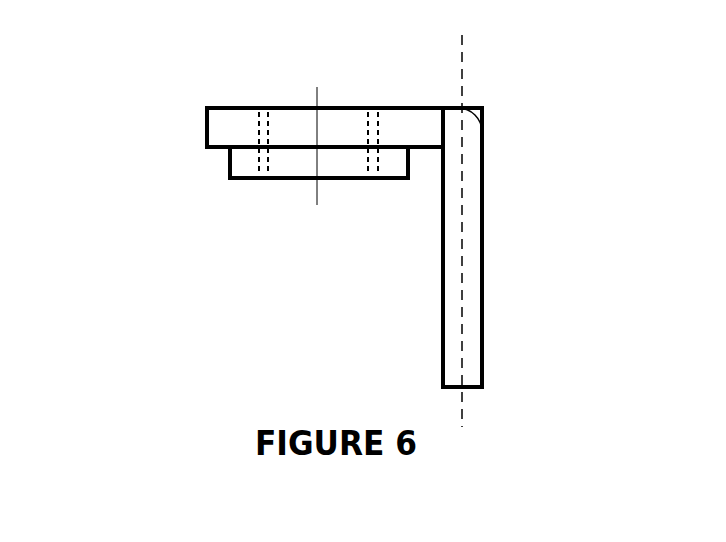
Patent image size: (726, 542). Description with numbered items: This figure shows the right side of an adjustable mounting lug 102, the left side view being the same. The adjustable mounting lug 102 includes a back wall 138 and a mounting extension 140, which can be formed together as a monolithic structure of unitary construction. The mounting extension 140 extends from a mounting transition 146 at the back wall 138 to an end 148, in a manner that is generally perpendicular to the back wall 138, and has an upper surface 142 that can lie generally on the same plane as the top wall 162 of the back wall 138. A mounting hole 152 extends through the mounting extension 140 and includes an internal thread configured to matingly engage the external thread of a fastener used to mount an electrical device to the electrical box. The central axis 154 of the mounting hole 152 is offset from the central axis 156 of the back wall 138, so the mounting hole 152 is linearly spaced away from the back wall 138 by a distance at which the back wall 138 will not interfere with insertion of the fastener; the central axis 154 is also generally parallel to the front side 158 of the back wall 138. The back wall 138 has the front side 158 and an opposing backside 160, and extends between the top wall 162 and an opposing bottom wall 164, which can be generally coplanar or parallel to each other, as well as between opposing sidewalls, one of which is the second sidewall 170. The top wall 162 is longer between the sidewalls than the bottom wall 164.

The adjustable mounting lug 102 is at (605, 152).
The back wall 138 is at (482, 350).
The mounting extension 140 is at (223, 132).
The upper surface 142 is at (237, 107).
The mounting transition 146 is at (484, 113).
The end 148 is at (206, 110).
The mounting hole 152 is at (297, 125).
The central axis 154 is at (316, 200).
The central axis 156 is at (460, 56).
The front side 158 is at (442, 345).
The backside 160 is at (483, 235).
The top wall 162 is at (470, 107).
The bottom wall 164 is at (470, 388).
The second sidewall 170 is at (483, 295).